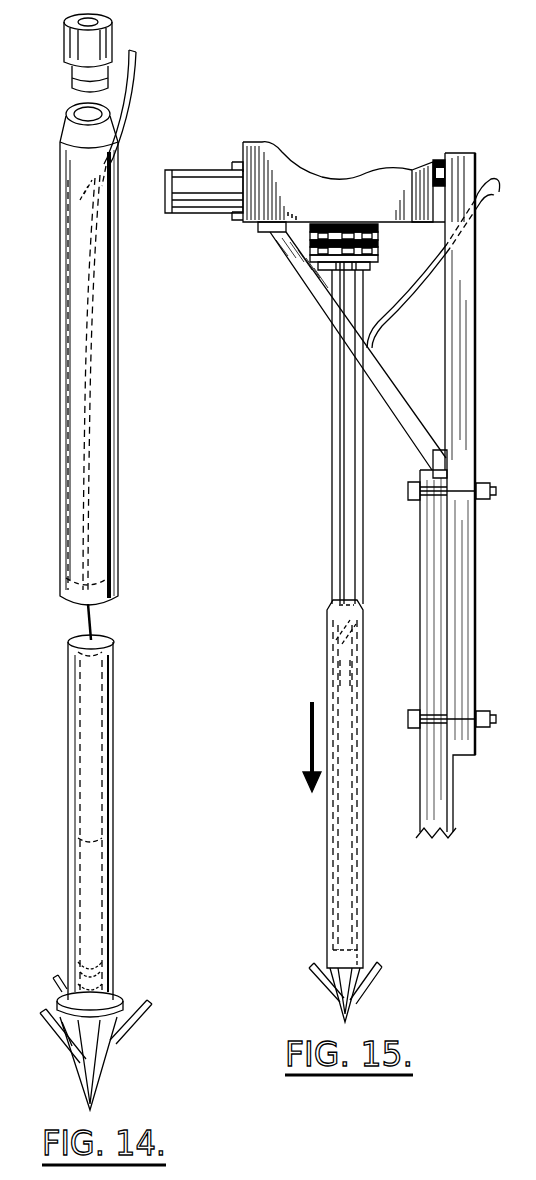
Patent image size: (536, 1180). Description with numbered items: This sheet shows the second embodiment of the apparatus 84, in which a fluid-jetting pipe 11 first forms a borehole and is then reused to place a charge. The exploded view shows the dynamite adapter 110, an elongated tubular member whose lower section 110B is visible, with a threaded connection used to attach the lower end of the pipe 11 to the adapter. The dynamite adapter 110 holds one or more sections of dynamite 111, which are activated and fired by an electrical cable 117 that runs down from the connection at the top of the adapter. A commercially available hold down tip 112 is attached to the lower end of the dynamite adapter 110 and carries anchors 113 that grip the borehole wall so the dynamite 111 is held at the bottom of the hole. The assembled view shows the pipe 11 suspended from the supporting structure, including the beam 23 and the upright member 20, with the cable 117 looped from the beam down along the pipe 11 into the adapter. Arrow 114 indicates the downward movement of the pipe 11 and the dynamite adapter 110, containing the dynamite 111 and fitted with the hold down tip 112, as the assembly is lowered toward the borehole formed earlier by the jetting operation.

In FIG. 14, the pipe 11 is at (100, 44).
In FIG. 15, the pipe 11 is at (344, 424).
In FIG. 14, the electrical cable 117 is at (133, 78).
In FIG. 15, the electrical cable 117 is at (400, 283).
In FIG. 14, the dynamite adapter 110 is at (112, 374).
In FIG. 15, the dynamite adapter 110 is at (330, 828).
In FIG. 14, the lower section 110B is at (113, 896).
In FIG. 14, the dynamite 111 is at (88, 713).
In FIG. 15, the dynamite 111 is at (340, 917).
In FIG. 14, the hold down tip 112 is at (102, 1072).
In FIG. 15, the hold down tip 112 is at (332, 995).
In FIG. 14, the anchor 113 is at (138, 1022).
In FIG. 15, the anchor 113 is at (378, 975).
In FIG. 15, the arrow 114 is at (312, 728).
In FIG. 15, the vertical post 20 is at (472, 382).
In FIG. 15, the beam 23 is at (315, 184).
In FIG. 15, the apparatus (second embodiment) 84 is at (424, 137).